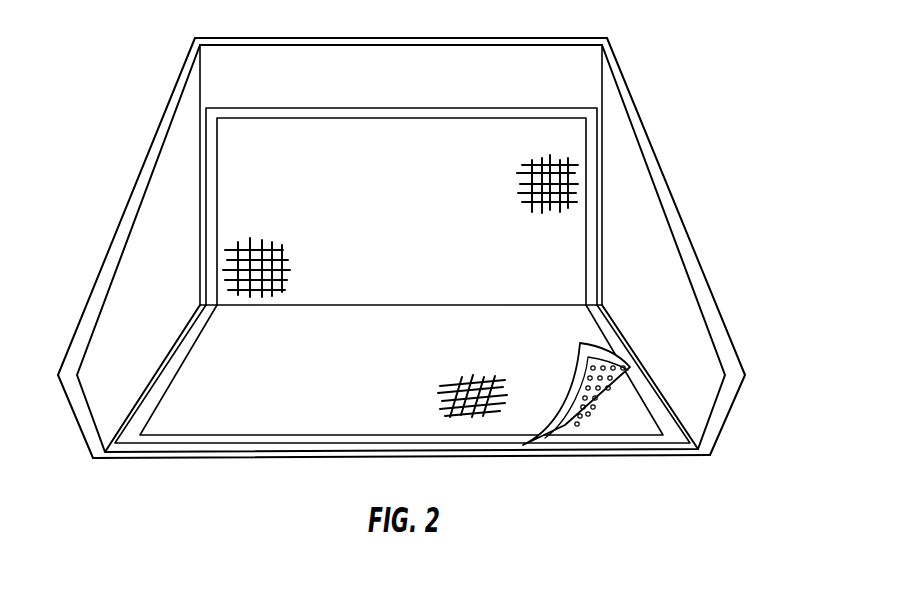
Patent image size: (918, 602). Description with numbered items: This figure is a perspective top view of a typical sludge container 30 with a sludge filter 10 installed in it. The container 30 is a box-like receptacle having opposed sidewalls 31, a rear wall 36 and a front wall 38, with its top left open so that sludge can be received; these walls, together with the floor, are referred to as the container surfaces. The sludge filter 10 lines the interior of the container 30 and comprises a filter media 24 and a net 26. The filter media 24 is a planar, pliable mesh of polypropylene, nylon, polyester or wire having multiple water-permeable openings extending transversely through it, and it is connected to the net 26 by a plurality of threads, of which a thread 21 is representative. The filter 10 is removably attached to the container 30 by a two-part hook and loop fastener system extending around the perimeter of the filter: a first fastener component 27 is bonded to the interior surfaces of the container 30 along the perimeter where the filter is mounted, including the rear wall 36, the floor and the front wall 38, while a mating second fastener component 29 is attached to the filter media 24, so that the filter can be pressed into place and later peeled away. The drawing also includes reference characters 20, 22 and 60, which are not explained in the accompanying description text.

The sludge filter 10 is at (353, 189).
The rear adhesive panel 20 is at (401, 189).
The thread 21 is at (320, 133).
The outer edge of rear panel 22 is at (377, 113).
The filter media 24 is at (413, 402).
The net 26 is at (622, 421).
The first fastener component 27 is at (653, 402).
The second fastener component 29 is at (563, 422).
The sludge container 30 is at (398, 268).
The sidewalls 31 is at (167, 293).
The rear wall 36 is at (415, 86).
The front wall 38 is at (498, 462).
The insect entry direction 60 is at (560, 240).